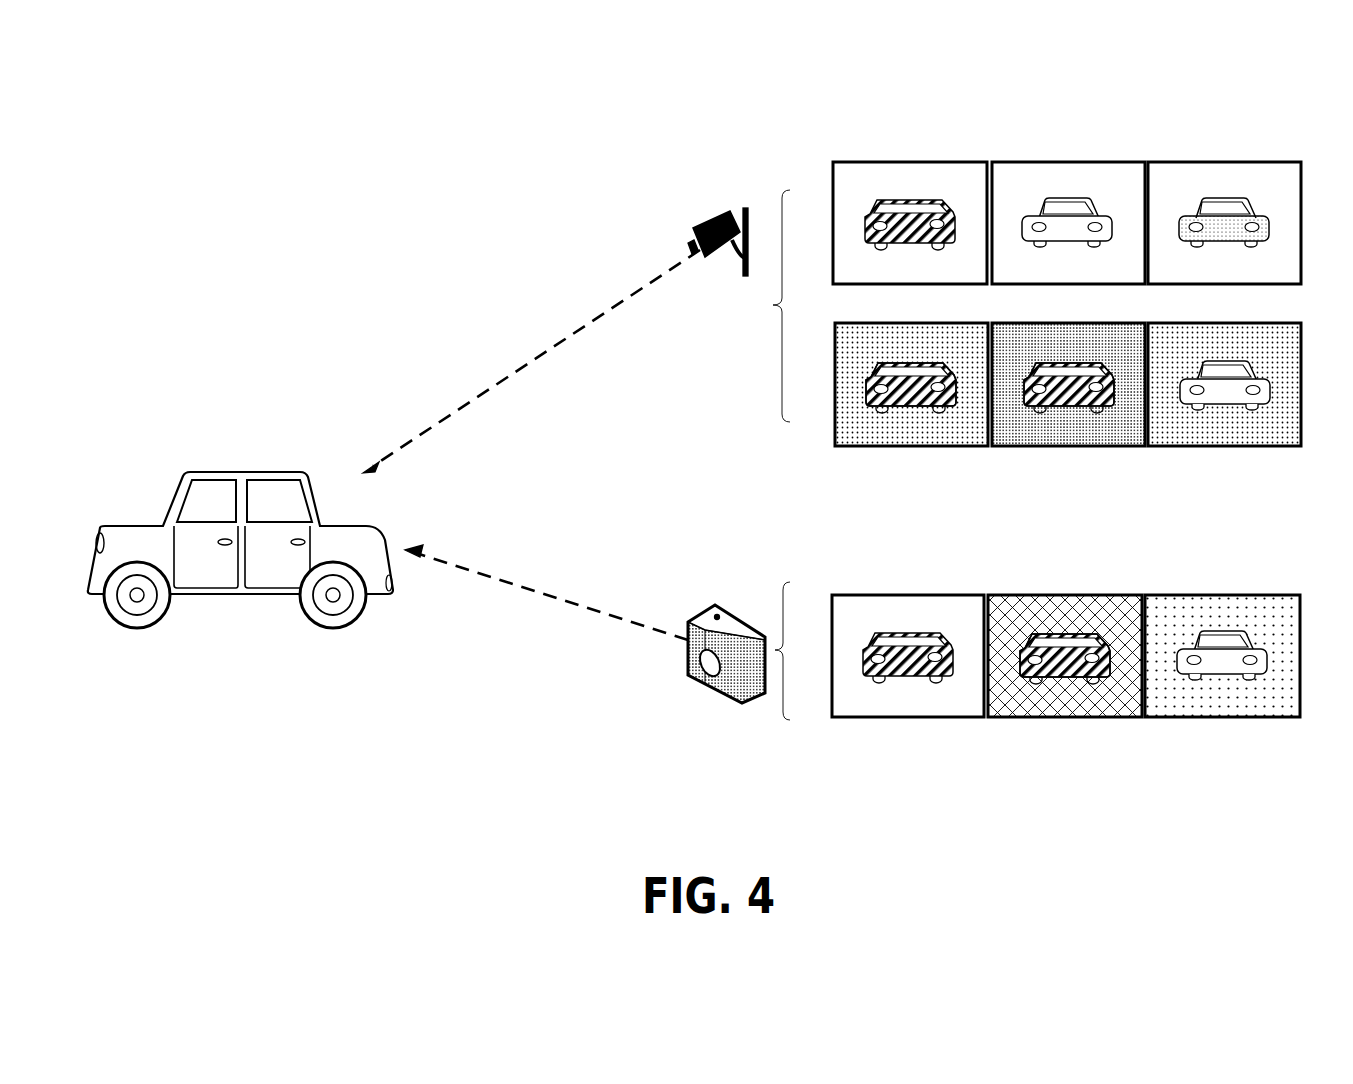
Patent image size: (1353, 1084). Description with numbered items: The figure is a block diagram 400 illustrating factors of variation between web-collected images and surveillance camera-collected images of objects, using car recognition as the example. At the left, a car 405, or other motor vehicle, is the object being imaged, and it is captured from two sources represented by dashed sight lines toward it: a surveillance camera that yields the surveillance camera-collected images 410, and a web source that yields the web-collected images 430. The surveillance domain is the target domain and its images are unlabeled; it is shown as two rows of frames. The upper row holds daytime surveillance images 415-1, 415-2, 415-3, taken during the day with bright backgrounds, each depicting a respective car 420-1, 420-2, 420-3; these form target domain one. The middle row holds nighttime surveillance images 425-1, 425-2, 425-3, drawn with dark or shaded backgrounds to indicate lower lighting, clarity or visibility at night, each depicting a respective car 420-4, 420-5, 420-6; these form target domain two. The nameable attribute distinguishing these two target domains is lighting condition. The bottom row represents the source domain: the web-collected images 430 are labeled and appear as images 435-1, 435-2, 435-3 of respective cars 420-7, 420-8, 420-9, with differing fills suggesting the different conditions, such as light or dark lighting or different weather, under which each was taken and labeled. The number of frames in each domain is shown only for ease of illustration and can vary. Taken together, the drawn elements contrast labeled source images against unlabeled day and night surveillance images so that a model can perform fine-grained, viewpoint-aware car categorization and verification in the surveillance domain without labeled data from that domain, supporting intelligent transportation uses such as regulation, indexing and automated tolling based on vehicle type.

The block diagram 400 is at (467, 115).
The car 405 is at (257, 464).
The surveillance camera-collected images 410 is at (703, 228).
The daytime surveillance image 415-1 is at (895, 160).
The daytime surveillance image 415-2 is at (1113, 160).
The daytime surveillance image 415-3 is at (1282, 160).
The car 420-1 is at (920, 200).
The car 420-2 is at (1060, 195).
The car 420-3 is at (1212, 200).
The car 420-4 is at (943, 408).
The car 420-5 is at (1093, 403).
The car 420-6 is at (1252, 402).
The car 420-7 is at (940, 680).
The car 420-8 is at (1092, 682).
The car 420-9 is at (1265, 682).
The nighttime surveillance image 425-1 is at (903, 445).
The nighttime surveillance image 425-2 is at (1047, 447).
The nighttime surveillance image 425-3 is at (1207, 447).
The web-collected images 430 is at (698, 615).
The web-collected image 435-1 is at (884, 718).
The web-collected image 435-2 is at (1034, 718).
The web-collected image 435-3 is at (1213, 718).